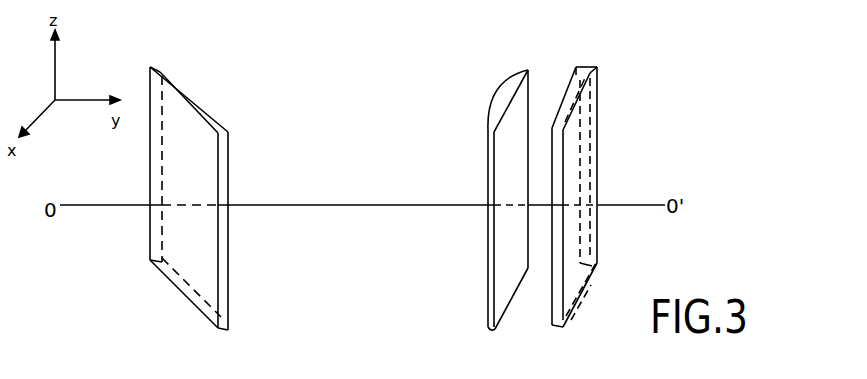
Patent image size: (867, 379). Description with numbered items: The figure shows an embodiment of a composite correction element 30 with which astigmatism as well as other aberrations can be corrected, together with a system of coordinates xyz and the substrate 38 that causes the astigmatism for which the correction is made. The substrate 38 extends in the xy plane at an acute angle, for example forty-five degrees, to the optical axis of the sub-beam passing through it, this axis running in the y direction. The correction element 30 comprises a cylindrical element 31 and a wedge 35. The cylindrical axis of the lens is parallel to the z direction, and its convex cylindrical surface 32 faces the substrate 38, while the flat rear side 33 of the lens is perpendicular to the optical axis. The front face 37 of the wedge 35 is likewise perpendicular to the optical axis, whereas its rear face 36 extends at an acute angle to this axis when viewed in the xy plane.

The correction element 30 is at (556, 44).
The cylindrical element 31 is at (488, 208).
The cylindrical surface 32 is at (487, 250).
The flat rear side 33 is at (508, 313).
The wedge 35 is at (593, 190).
The rear face 36 is at (596, 163).
The front face 37 is at (570, 93).
The substrate 38 is at (185, 82).